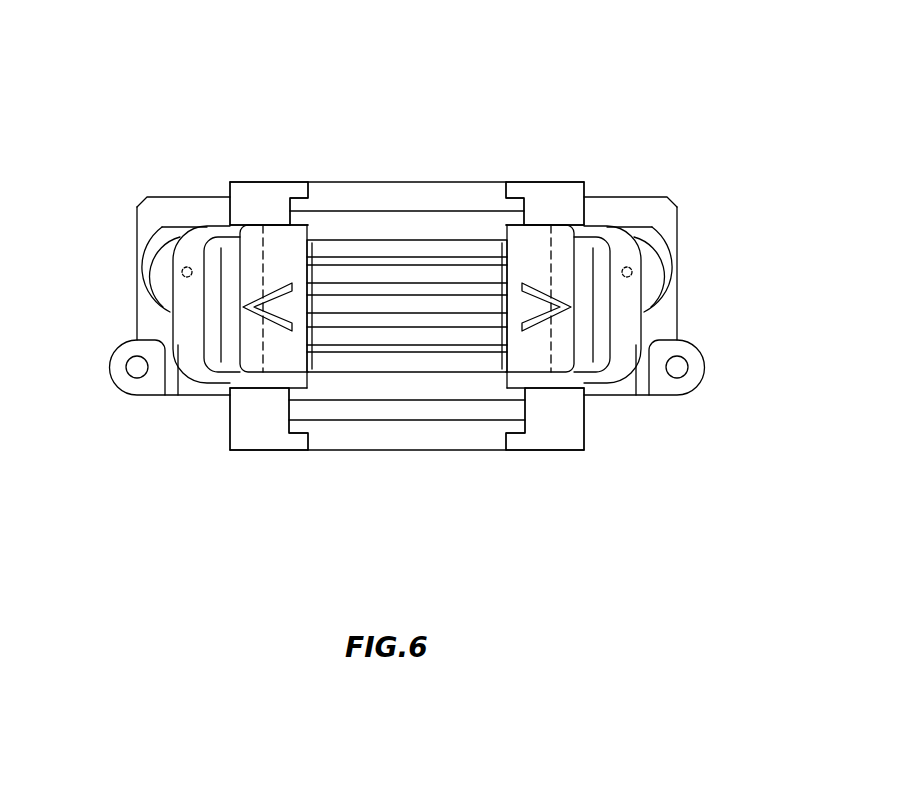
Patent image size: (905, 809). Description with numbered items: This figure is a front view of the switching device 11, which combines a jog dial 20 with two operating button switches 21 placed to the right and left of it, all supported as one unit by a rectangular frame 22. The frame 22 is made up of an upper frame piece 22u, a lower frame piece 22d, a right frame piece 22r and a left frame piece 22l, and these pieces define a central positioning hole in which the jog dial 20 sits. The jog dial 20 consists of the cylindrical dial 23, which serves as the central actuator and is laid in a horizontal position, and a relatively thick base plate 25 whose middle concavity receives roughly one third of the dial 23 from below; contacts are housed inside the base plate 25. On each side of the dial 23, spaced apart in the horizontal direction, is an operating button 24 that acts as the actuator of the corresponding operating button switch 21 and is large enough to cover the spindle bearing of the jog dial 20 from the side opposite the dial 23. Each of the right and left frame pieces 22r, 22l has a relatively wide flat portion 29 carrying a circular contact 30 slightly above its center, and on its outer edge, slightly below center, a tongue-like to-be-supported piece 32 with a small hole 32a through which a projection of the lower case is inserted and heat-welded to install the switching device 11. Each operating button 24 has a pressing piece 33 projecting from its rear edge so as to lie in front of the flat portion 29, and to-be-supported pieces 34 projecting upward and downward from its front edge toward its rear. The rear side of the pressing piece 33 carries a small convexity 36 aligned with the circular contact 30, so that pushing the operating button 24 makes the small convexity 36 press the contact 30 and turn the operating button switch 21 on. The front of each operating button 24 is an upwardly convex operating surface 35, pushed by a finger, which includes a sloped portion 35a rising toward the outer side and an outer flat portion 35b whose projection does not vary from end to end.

The switching device 11 is at (402, 128).
The jog dial 20 is at (440, 248).
The operating button switch 21 is at (250, 255).
The frame 22 is at (358, 192).
The upper frame piece 22u is at (420, 192).
The lower frame piece 22d is at (458, 433).
The left frame piece 22l is at (158, 325).
The right frame piece 22r is at (670, 293).
The dial 23 is at (378, 338).
The operating button 24 is at (232, 268).
The base plate 25 is at (412, 389).
The flat portion 29 is at (156, 206).
The circular contact 30 is at (170, 245).
The to-be-supported piece 32 is at (131, 387).
The small hole 32a is at (140, 364).
The pressing piece 33 is at (183, 296).
The to-be-supported piece 34 is at (245, 195).
The operating surface 35 is at (235, 522).
The sloped portion 35a is at (231, 355).
The flat portion 35b is at (210, 362).
The small convexity 36 is at (182, 271).